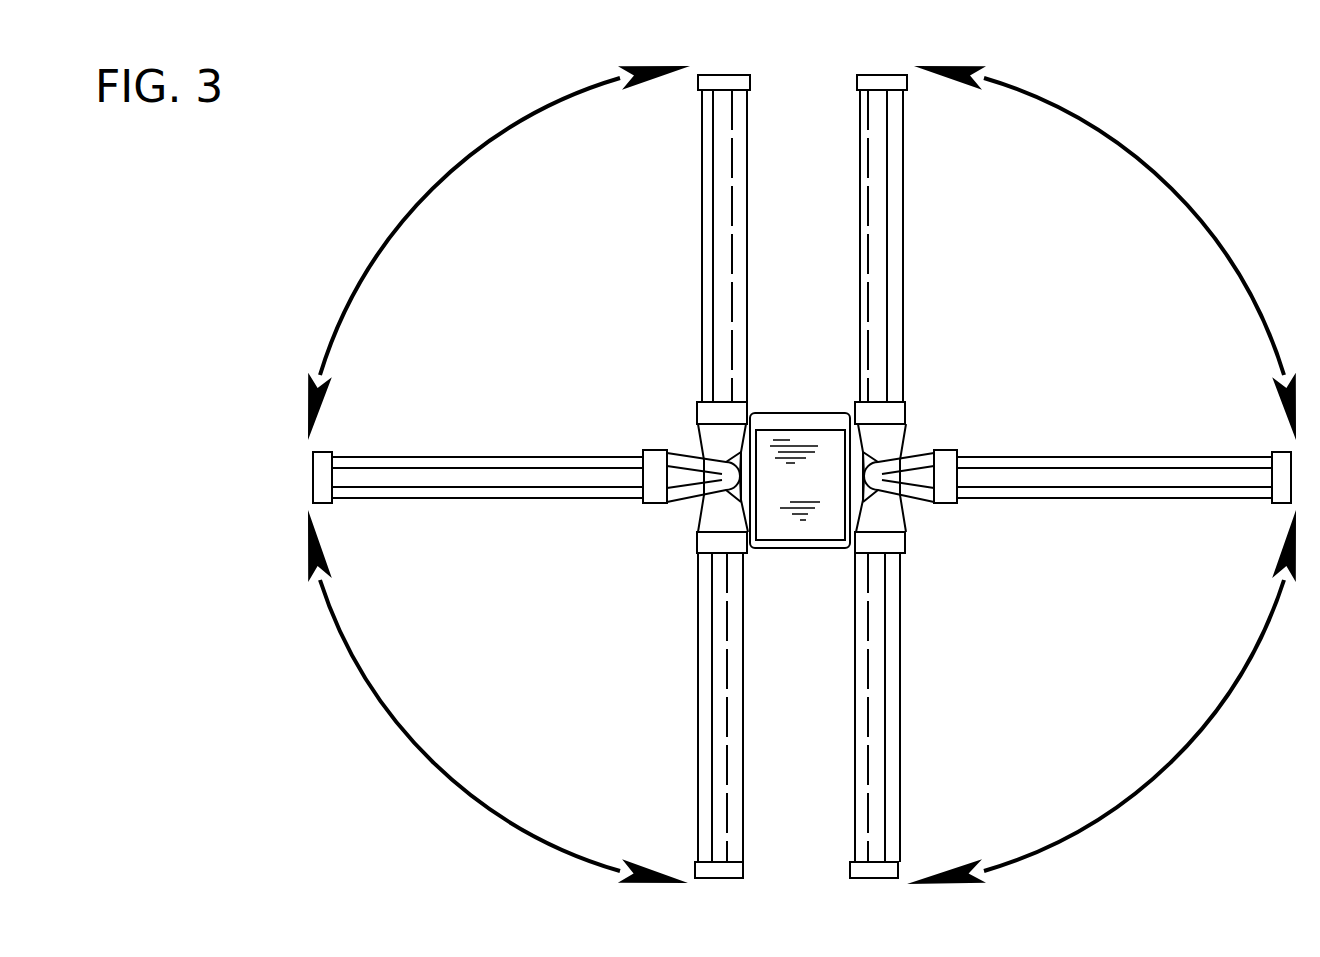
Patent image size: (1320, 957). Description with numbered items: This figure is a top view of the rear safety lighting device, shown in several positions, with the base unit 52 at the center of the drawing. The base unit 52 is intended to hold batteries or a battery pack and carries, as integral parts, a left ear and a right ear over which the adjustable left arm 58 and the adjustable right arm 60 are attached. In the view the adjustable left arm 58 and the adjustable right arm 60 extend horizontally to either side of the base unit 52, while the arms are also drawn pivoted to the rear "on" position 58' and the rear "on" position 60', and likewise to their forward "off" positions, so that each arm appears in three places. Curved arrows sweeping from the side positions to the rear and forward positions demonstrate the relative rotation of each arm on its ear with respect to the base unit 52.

The base unit 52 is at (790, 550).
The adjustable left arm 58 is at (526, 432).
The adjustable right arm 60 is at (1077, 435).
The rear "on" position 58' is at (660, 249).
The rear "on" position 60' is at (943, 249).